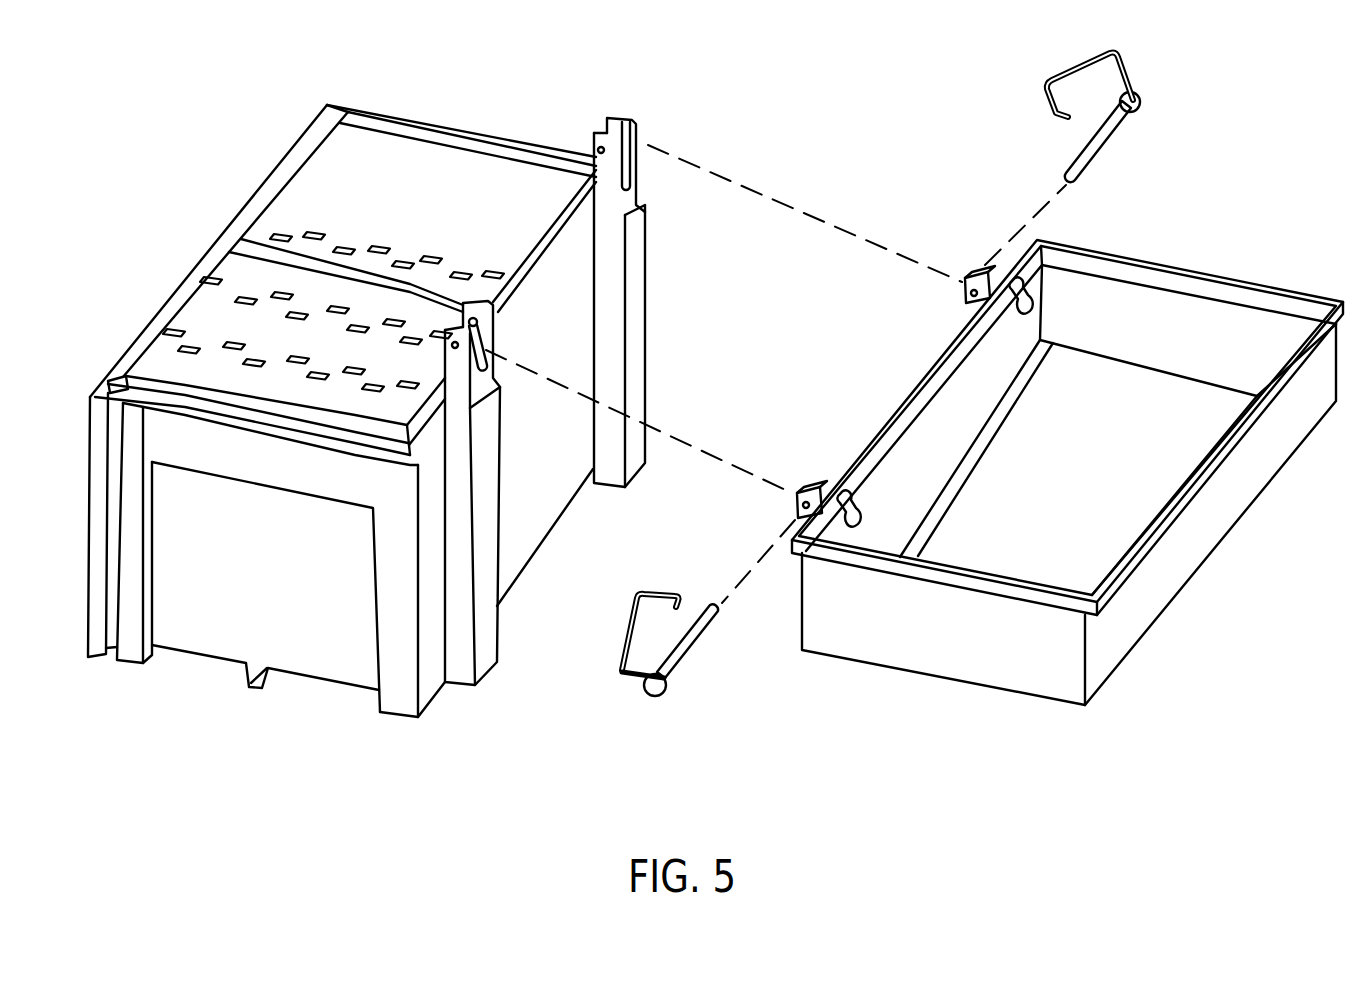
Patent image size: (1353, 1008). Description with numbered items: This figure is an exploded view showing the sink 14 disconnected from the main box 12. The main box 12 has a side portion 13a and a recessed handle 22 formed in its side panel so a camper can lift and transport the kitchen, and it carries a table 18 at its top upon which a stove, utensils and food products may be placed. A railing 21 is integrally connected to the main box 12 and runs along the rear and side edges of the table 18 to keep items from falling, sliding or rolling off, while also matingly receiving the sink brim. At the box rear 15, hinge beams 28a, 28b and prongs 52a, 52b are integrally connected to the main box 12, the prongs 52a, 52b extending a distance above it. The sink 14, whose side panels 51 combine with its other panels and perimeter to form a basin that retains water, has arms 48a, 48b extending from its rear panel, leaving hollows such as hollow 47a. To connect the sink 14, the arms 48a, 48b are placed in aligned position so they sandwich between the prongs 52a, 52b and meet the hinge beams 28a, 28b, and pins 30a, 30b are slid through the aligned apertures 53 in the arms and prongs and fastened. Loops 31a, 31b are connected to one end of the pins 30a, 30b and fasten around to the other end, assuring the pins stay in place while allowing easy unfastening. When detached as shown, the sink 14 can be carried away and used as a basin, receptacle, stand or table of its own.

The main box 12 is at (668, 244).
The side portion 13a is at (250, 598).
The sink 14 is at (1268, 513).
The box rear 15 is at (540, 347).
The table 18 is at (408, 209).
The railing 21 is at (572, 216).
The recessed handle 22 is at (262, 497).
The hinge beam 28a is at (488, 503).
The hinge beam 28b is at (638, 352).
The pin 30a is at (695, 645).
The pin 30b is at (1107, 140).
The loop 31a is at (634, 612).
The loop 31b is at (1090, 66).
The hollow 47a is at (860, 519).
The arm 48a is at (805, 485).
The arm 48b is at (977, 270).
The sink side panel 51 is at (1196, 346).
The prong 52a is at (477, 304).
The prong 52b is at (622, 120).
The aperture 53 is at (597, 148).